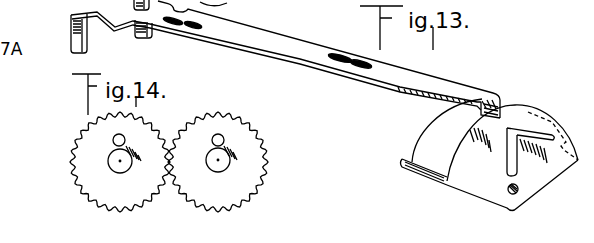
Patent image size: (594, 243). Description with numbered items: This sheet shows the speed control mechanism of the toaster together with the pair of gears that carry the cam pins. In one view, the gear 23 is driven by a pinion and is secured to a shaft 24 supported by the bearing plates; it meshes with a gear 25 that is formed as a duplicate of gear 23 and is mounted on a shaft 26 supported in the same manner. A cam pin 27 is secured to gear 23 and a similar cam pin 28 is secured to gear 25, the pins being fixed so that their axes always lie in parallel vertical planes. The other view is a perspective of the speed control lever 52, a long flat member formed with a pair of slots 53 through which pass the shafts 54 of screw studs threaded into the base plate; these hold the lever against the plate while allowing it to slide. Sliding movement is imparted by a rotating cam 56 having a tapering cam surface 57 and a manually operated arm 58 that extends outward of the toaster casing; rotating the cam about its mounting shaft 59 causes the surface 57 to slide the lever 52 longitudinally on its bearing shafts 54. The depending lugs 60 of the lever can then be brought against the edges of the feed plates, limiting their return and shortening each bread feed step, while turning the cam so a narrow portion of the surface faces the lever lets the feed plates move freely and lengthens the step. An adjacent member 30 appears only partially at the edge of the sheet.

In FIG. 14, the gear 23 is at (87, 160).
In FIG. 14, the shaft 24 is at (112, 170).
In FIG. 14, the gear 25 is at (253, 158).
In FIG. 14, the shaft 26 is at (208, 172).
In FIG. 14, the cam pin 27 is at (113, 139).
In FIG. 14, the cam pin 28 is at (225, 138).
In FIG. 13, the member 30 is at (242, 6).
In FIG. 13, the speed control lever 52 is at (283, 43).
In FIG. 13, the slots 53 is at (195, 28).
In FIG. 13, the shafts 54 is at (180, 23).
In FIG. 13, the cam 56 is at (442, 140).
In FIG. 13, the cam surface 57 is at (452, 112).
In FIG. 13, the manually operated arm 58 is at (540, 132).
In FIG. 13, the mounting shaft 59 is at (520, 193).
In FIG. 13, the depending lugs 60 is at (80, 52).